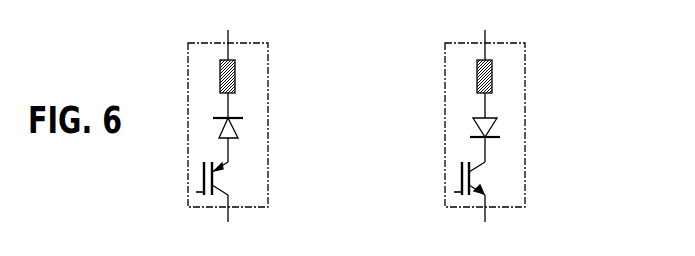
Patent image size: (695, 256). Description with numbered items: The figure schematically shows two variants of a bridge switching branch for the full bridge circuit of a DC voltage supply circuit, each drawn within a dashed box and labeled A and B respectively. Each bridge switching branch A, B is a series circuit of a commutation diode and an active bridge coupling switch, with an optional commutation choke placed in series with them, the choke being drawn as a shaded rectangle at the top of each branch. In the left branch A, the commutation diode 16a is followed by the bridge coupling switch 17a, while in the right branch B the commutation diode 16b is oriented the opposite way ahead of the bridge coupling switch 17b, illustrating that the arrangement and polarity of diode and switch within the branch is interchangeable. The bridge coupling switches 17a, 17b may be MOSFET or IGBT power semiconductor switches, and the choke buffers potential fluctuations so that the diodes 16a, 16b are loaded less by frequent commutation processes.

The bridge switching branch A is at (268, 66).
The second circuit variant B is at (525, 66).
The commutation diode 16a is at (239, 128).
The commutation diode 16b is at (497, 125).
The bridge coupling switch 17a is at (230, 178).
The bridge coupling switch 17b is at (478, 179).